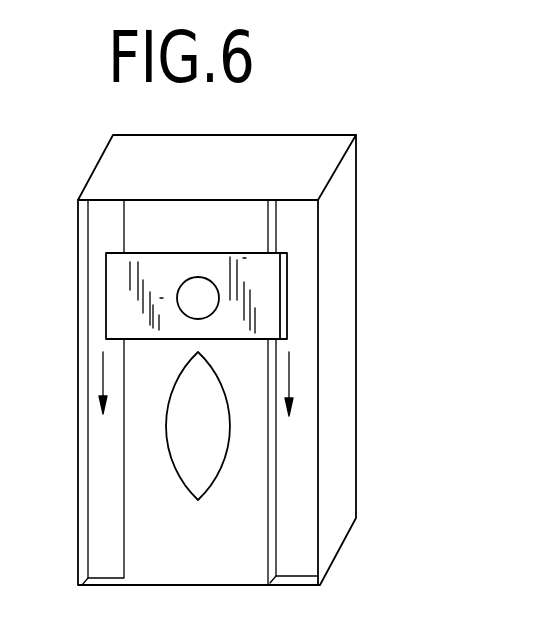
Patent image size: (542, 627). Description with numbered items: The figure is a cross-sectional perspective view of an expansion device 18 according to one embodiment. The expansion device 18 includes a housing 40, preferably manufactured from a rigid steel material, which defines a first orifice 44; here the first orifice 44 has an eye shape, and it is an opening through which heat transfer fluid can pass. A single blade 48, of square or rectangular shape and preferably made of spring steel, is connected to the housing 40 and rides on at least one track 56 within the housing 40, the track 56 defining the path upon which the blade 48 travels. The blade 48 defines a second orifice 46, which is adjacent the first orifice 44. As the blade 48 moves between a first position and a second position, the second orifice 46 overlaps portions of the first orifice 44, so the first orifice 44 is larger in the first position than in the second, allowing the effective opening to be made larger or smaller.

The expansion device 18 is at (387, 310).
The housing 40 is at (330, 462).
The first orifice 44 is at (178, 438).
The second orifice 46 is at (197, 303).
The blade 48 is at (265, 283).
The track 56 is at (107, 530).